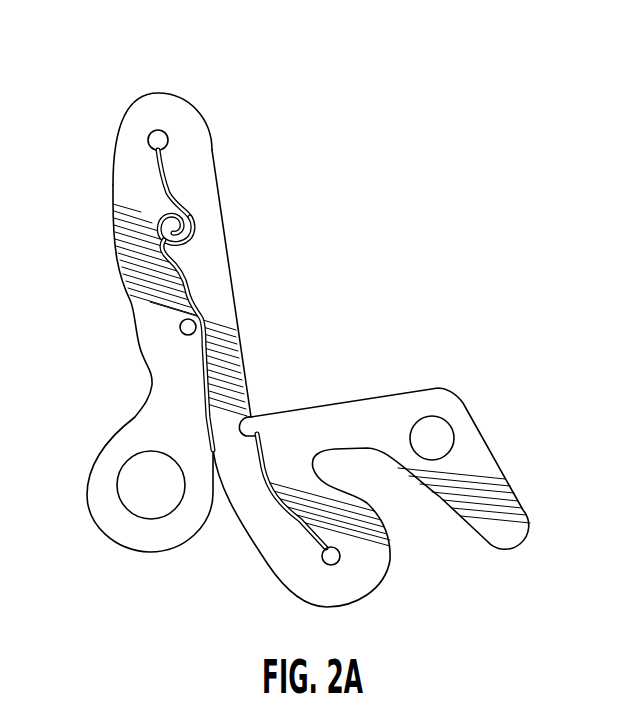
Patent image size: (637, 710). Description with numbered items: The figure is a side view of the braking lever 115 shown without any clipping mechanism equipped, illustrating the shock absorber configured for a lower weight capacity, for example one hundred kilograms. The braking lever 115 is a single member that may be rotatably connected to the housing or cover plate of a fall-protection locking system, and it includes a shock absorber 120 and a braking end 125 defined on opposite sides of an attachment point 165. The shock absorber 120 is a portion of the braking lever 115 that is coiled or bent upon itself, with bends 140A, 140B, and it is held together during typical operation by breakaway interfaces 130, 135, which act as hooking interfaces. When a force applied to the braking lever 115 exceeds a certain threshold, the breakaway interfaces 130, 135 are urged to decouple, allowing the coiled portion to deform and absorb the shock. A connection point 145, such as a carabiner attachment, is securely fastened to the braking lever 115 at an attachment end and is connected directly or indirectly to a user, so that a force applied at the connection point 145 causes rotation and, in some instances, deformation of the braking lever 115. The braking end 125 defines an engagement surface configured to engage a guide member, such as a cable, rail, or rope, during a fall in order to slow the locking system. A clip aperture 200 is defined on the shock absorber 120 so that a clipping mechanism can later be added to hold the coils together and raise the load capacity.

The braking lever 115 is at (221, 52).
The shock absorber 120 is at (113, 165).
The braking end 125 is at (490, 518).
The breakaway interface 130 is at (190, 226).
The breakaway interface 135 is at (254, 416).
The bend 140A is at (308, 578).
The bend 140B is at (190, 120).
The connection point 145 is at (152, 486).
The attachment point 165 is at (432, 432).
The clip aperture 200 is at (200, 323).